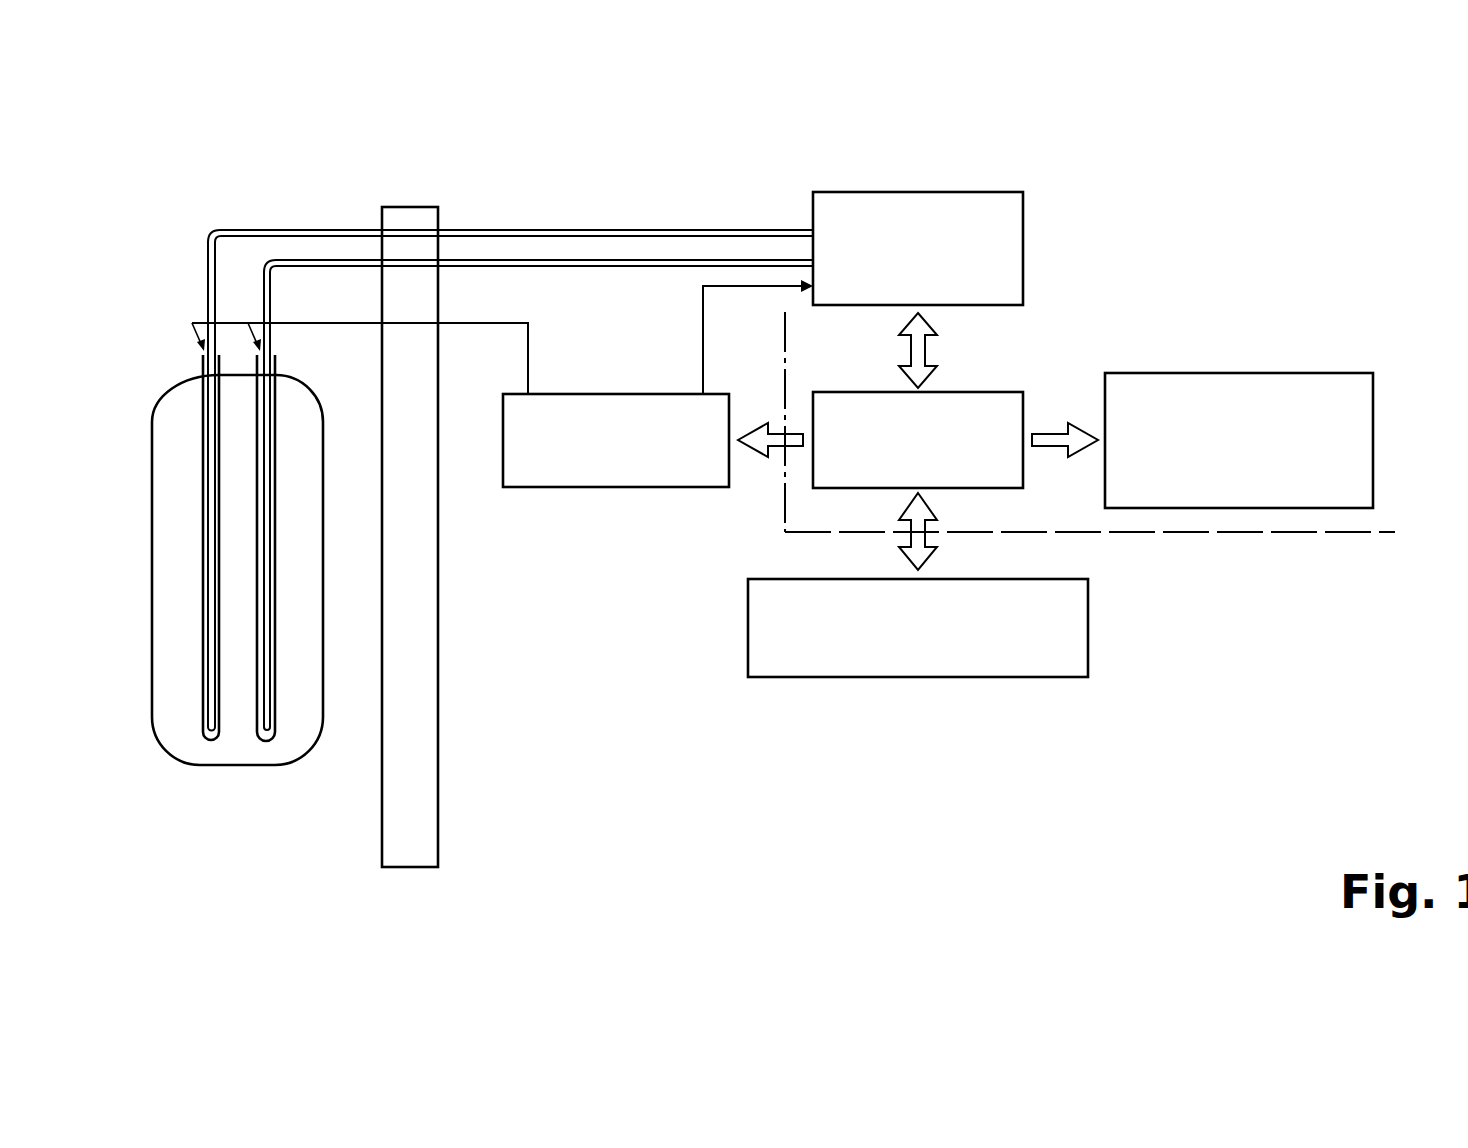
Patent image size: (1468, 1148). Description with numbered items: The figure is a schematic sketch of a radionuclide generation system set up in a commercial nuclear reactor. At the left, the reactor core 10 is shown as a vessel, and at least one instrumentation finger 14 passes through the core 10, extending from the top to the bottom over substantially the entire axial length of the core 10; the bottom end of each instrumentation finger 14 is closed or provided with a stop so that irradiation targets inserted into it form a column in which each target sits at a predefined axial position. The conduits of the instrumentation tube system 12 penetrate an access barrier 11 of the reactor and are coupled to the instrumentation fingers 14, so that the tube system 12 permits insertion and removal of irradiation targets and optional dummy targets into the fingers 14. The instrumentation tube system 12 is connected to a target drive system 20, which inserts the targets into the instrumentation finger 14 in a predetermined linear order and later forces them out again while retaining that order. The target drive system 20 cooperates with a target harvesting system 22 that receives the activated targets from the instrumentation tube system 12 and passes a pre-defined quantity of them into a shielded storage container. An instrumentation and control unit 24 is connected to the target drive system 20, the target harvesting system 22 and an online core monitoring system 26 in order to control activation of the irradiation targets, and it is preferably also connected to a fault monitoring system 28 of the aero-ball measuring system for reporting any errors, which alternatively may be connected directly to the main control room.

The core 10 is at (183, 665).
The access barrier 11 is at (418, 792).
The instrumentation tube system 12 is at (303, 260).
The instrumentation finger 14 is at (203, 562).
The target drive system 20 is at (600, 453).
The target harvesting system 22 is at (918, 248).
The instrumentation and control unit 24 is at (901, 453).
The online core monitoring system 26 is at (901, 640).
The fault monitoring system 28 is at (1223, 453).